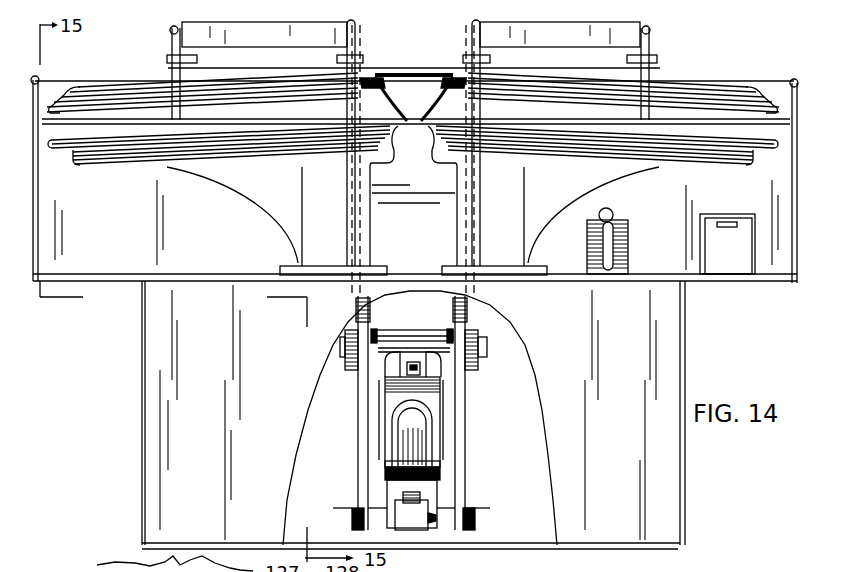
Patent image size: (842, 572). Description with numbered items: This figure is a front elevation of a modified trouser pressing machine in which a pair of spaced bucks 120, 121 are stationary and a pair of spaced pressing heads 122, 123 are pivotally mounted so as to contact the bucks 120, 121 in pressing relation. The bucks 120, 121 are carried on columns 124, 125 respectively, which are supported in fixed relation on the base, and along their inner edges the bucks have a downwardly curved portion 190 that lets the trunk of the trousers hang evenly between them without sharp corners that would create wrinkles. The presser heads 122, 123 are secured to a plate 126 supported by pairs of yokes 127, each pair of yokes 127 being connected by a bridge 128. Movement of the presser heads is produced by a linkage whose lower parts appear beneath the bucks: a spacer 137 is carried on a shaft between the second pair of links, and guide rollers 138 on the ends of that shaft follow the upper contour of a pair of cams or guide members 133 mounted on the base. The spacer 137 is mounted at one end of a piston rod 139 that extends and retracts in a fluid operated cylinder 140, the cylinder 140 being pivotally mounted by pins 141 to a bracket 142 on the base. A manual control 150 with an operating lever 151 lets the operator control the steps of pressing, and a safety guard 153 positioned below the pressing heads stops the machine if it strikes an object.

The buck 120 is at (105, 157).
The buck 121 is at (707, 157).
The pressing head 122 is at (102, 97).
The pressing head 123 is at (708, 98).
The column 124 is at (320, 230).
The column 125 is at (503, 245).
The plate 126 is at (425, 68).
The yoke 127 is at (172, 29).
The bridge 128 is at (293, 28).
The guide member 133 is at (368, 448).
The spacer 137 is at (415, 343).
The guide roller 138 is at (382, 332).
The piston rod 139 is at (407, 370).
The fluid operated cylinder 140 is at (428, 450).
The pin 141 is at (436, 518).
The bracket 142 is at (428, 532).
The manual control 150 is at (627, 243).
The operating lever 151 is at (611, 213).
The safety guard 153 is at (412, 122).
The downwardly curved portion 190 is at (400, 135).